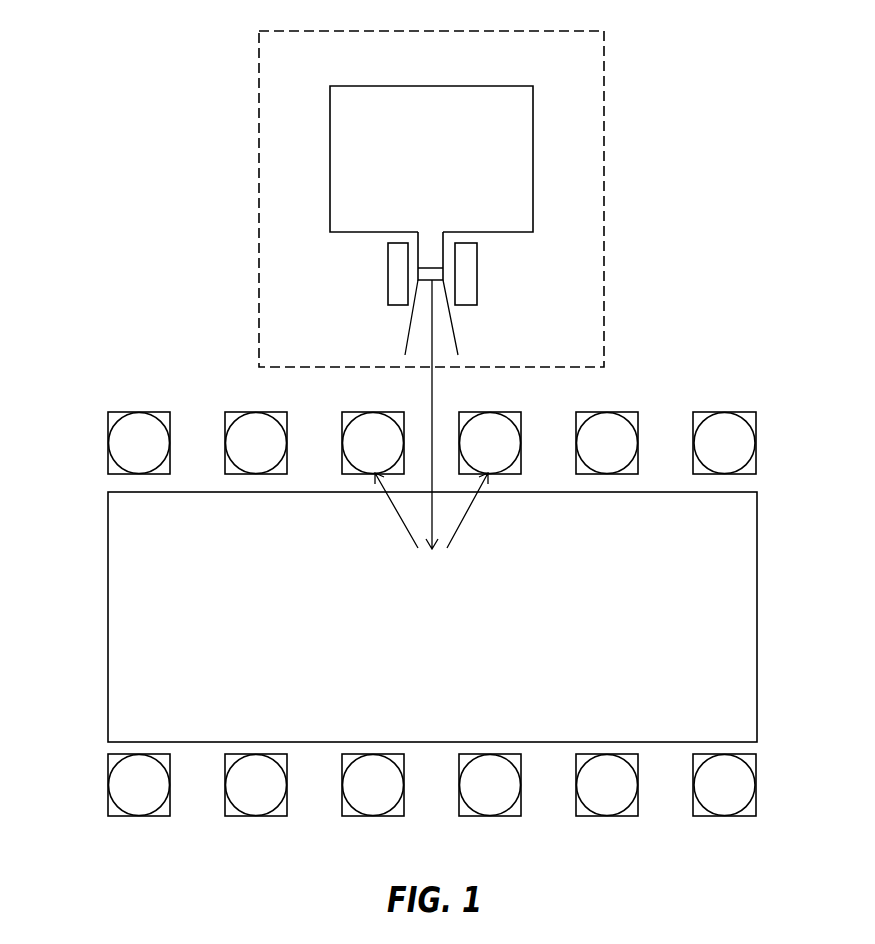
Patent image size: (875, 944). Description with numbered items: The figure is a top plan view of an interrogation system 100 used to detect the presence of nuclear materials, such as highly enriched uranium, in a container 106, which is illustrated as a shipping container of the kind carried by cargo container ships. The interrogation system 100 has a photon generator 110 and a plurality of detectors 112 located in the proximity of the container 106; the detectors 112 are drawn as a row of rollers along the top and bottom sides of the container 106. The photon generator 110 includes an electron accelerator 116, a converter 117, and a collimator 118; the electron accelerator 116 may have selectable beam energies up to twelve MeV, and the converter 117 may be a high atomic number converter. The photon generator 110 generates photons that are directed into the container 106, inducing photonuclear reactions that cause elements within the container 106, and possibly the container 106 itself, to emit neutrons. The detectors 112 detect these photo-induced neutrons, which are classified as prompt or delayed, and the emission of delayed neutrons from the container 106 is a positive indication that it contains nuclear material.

The interrogation system 100 is at (128, 292).
The container 106 is at (757, 614).
The photon generator 110 is at (605, 145).
The detectors 112 is at (770, 442).
The electron accelerator 116 is at (438, 247).
The converter 117 is at (418, 272).
The collimator 118 is at (477, 283).